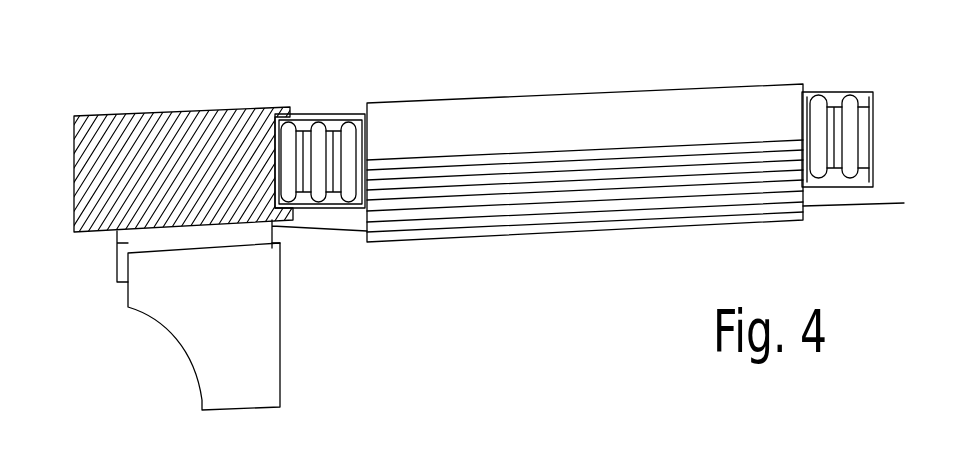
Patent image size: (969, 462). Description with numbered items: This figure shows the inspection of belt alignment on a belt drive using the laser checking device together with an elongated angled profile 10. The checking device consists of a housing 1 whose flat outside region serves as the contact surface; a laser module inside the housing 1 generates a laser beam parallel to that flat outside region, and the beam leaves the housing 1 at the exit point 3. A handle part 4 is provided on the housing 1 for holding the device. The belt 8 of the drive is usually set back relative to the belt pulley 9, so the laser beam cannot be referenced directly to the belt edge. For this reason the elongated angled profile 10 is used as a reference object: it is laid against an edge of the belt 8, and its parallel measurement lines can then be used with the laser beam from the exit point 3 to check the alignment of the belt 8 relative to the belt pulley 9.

The housing 1 is at (127, 243).
The exit point 3 is at (278, 241).
The handle part 4 is at (182, 332).
The belt 8 is at (323, 130).
The belt pulley 9 is at (176, 110).
The angled profile 10 is at (425, 125).